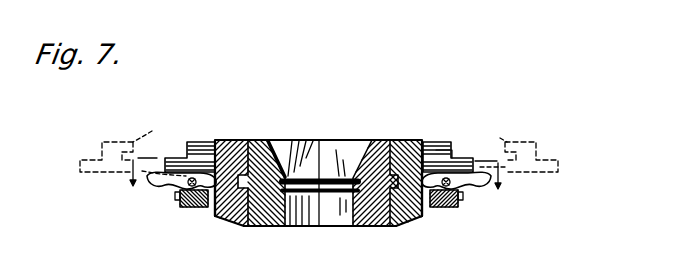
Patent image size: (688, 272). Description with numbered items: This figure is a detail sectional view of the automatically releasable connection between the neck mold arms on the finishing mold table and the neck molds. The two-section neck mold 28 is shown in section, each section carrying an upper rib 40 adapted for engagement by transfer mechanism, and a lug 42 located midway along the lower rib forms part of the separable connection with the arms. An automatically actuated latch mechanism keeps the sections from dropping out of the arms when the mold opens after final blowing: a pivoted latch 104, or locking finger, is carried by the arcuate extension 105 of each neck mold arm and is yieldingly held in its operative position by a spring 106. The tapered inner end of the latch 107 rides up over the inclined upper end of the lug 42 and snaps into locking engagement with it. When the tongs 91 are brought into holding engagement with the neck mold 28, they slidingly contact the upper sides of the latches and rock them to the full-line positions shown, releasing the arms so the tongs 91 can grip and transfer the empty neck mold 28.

The upper rib 40 is at (223, 140).
The neck mold 28 is at (248, 227).
The lug 42 is at (217, 210).
The tongs 91 is at (191, 141).
The pivoted latch 104 is at (160, 188).
The arcuate extension 105 is at (198, 208).
The spring 106 is at (175, 200).
The inner end of latch 107 is at (442, 155).